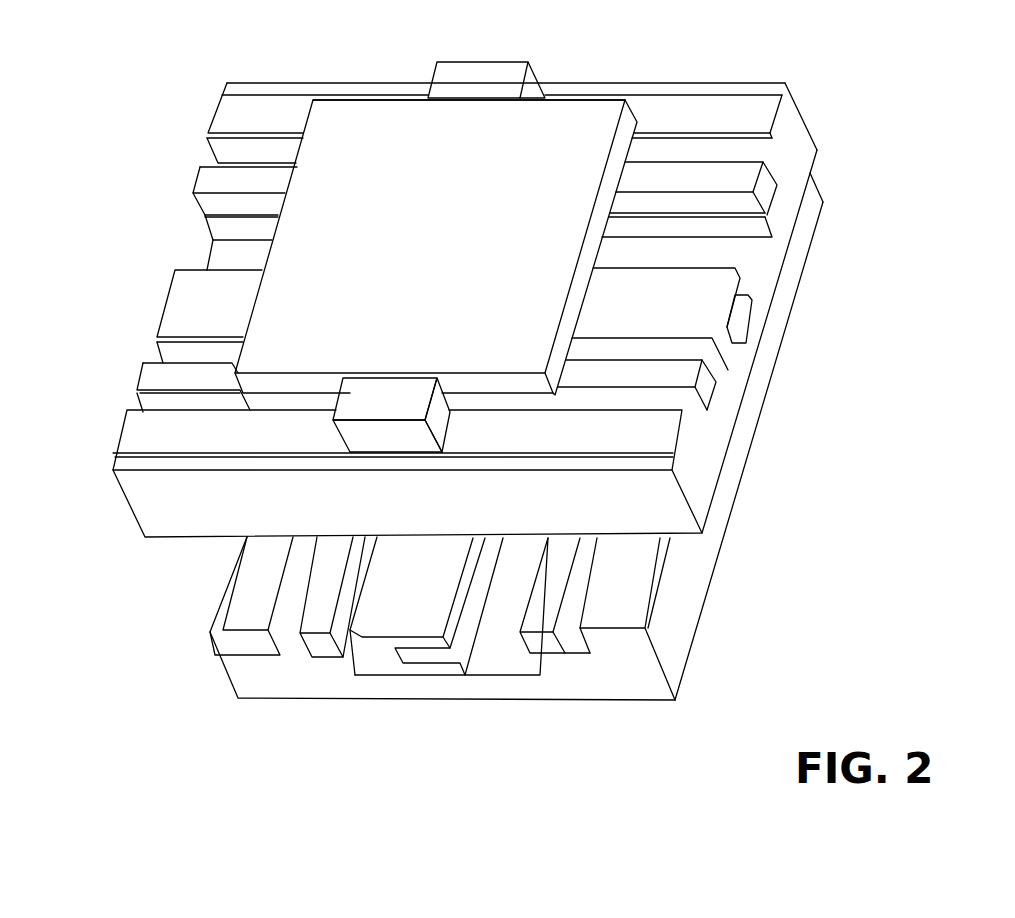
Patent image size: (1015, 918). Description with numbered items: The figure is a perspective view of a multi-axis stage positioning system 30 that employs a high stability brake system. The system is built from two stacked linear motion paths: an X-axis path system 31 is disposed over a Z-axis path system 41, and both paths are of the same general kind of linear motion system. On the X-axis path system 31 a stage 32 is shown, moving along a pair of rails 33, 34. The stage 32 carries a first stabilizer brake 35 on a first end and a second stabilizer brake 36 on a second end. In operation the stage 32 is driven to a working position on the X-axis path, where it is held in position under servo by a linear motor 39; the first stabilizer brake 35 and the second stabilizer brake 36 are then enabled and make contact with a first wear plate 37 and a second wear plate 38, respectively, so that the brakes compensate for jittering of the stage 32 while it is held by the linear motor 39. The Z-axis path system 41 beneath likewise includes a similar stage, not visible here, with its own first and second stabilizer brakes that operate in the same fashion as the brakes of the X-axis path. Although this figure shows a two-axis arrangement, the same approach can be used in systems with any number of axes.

The multi-axis stage positioning system 30 is at (892, 91).
The X-axis path system 31 is at (194, 68).
The stage 32 is at (592, 105).
The rail 33 is at (742, 180).
The rail 34 is at (675, 375).
The first stabilizer brake 35 is at (485, 73).
The second stabilizer brake 36 is at (367, 402).
The first wear plate 37 is at (750, 100).
The second wear plate 38 is at (655, 437).
The linear motor 39 is at (705, 310).
The Z-axis path system 41 is at (185, 653).